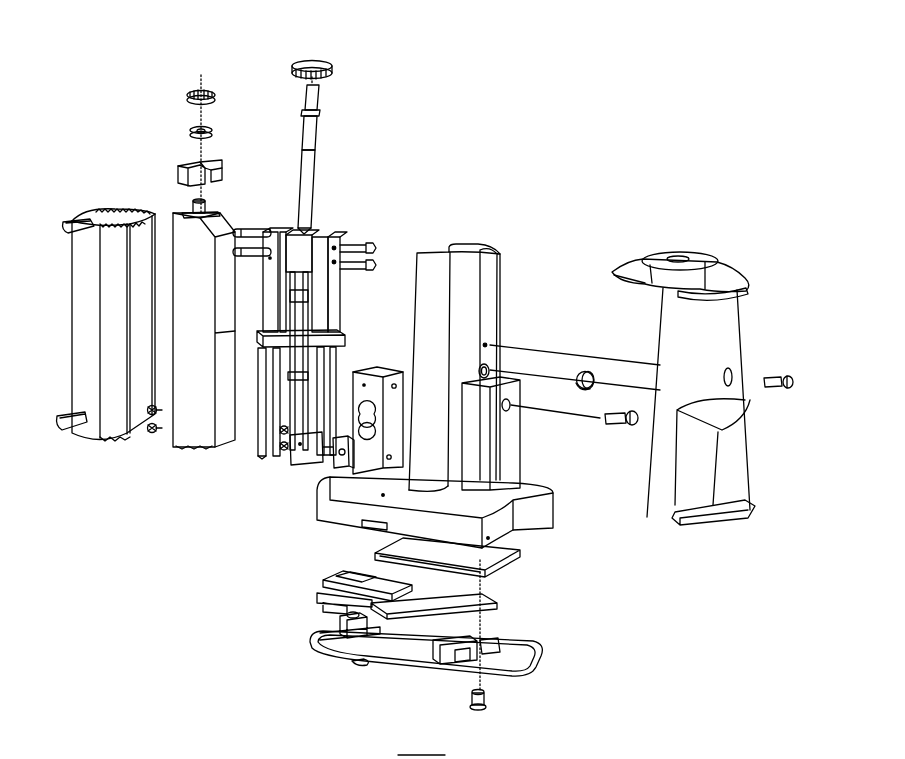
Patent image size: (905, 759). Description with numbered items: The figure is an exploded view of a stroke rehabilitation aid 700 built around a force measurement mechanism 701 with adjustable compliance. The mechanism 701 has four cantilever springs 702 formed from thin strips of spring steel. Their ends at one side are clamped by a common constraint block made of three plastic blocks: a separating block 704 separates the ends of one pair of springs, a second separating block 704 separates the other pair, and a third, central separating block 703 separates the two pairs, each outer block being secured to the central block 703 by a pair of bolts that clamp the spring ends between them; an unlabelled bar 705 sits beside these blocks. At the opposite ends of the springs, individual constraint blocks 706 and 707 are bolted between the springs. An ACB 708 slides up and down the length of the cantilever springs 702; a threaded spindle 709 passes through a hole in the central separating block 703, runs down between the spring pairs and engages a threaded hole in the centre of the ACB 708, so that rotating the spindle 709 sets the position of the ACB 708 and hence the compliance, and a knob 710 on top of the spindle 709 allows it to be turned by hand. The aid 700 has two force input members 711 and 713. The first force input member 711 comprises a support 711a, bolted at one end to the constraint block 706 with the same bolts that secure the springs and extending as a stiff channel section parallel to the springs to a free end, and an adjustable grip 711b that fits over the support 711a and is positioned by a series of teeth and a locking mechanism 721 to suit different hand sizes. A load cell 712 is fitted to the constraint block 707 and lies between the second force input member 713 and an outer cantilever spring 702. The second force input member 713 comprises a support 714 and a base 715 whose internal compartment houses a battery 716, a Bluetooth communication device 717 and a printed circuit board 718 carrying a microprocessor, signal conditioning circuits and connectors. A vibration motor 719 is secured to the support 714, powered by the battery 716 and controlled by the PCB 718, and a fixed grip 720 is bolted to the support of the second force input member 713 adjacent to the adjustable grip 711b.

The stroke rehabilitation aid 700 is at (674, 98).
The force measurement mechanism 701 is at (222, 510).
The cantilever springs 702 is at (308, 393).
The third separating block 703 is at (305, 233).
The separating block 704 is at (326, 240).
The left bar 705 is at (276, 237).
The individual constraint block 706 is at (263, 440).
The individual constraint block 707 is at (305, 455).
The ACB 708 is at (336, 336).
The threaded spindle 709 is at (312, 128).
The knob 710 is at (332, 67).
The force input member 711 is at (122, 460).
The support 711a is at (188, 228).
The adjustable grip 711b is at (118, 240).
The load cell 712 is at (372, 382).
The second force input member 713 is at (522, 256).
The support 714 is at (487, 293).
The vibration motor 719 is at (582, 374).
The fixed grip 720 is at (693, 316).
The base 715 is at (540, 530).
The battery 716 is at (505, 560).
The Bluetooth communication device 717 is at (340, 597).
The printed circuit board 718 is at (490, 612).
The locking mechanism 721 is at (212, 88).